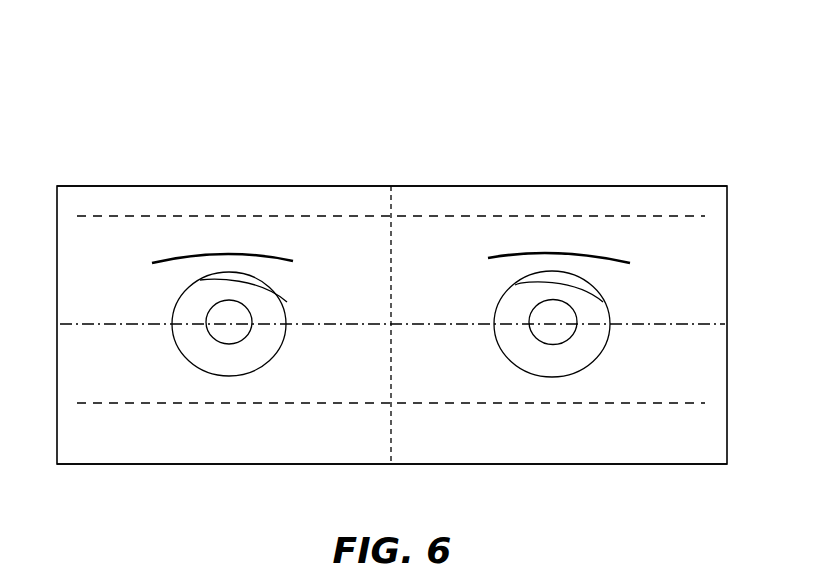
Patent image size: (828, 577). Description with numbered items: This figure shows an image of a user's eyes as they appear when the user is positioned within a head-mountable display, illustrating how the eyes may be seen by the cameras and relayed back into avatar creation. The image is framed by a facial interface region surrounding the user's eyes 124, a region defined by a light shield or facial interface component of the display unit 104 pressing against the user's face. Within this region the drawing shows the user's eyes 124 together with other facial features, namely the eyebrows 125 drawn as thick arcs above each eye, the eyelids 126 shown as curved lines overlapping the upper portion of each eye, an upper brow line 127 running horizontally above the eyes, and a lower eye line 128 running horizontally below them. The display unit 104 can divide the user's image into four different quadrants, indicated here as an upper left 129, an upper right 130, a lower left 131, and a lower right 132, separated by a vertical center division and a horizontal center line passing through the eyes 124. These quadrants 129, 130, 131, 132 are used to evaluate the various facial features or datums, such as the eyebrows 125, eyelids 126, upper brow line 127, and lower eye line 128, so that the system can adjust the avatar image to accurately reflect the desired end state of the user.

The display unit 104 is at (224, 186).
The user's eyes 124 is at (190, 364).
The eyebrows 125 is at (598, 255).
The eyelids 126 is at (207, 282).
The upper brow line 127 is at (547, 213).
The lower eye line 128 is at (548, 403).
The upper left quadrant 129 is at (332, 198).
The upper right quadrant 130 is at (452, 197).
The lower left quadrant 131 is at (330, 452).
The lower right quadrant 132 is at (451, 452).